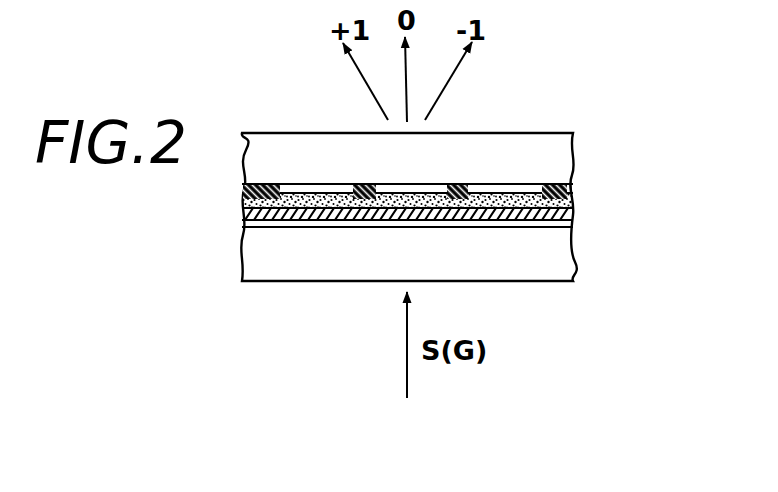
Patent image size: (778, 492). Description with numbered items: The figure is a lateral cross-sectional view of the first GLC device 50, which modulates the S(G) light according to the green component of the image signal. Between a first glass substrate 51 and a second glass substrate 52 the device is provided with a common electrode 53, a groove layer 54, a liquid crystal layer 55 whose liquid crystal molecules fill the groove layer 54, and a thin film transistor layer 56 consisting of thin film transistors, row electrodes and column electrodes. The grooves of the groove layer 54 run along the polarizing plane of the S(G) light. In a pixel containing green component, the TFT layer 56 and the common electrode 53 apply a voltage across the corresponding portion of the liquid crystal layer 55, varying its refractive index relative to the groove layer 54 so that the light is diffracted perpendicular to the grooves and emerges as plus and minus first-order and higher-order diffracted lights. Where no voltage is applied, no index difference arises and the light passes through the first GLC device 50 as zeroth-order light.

The first GLC device 50 is at (553, 124).
The first glass substrate 51 is at (580, 277).
The second glass substrate 52 is at (557, 153).
The common electrode 53 is at (578, 226).
The groove layer 54 is at (577, 217).
The liquid crystal layer 55 is at (571, 199).
The thin film transistor (TFT) layer 56 is at (572, 187).